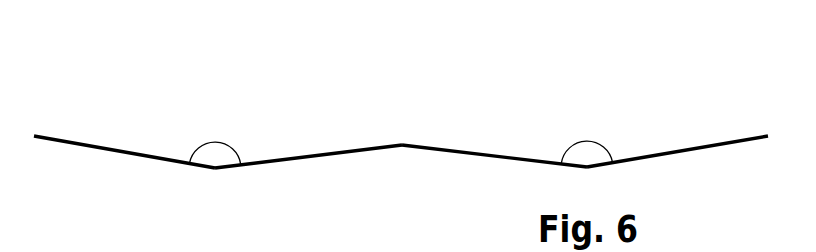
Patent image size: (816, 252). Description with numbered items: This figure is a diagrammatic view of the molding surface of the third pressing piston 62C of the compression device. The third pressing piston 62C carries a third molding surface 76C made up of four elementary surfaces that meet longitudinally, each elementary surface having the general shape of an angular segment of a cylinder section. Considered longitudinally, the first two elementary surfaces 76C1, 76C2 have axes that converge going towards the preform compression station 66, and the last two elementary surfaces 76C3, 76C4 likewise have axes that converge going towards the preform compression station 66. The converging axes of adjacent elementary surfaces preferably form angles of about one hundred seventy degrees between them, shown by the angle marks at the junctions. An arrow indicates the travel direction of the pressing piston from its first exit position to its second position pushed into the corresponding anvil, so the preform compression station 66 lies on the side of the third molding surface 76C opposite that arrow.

The third pressing piston 62C is at (130, 90).
The third molding surface 76C is at (333, 152).
The first elementary surface 76C1 is at (125, 152).
The second elementary surface 76C2 is at (295, 159).
The third elementary surface 76C3 is at (497, 157).
The fourth elementary surface 76C4 is at (700, 149).
The preform compression station 66 is at (402, 73).